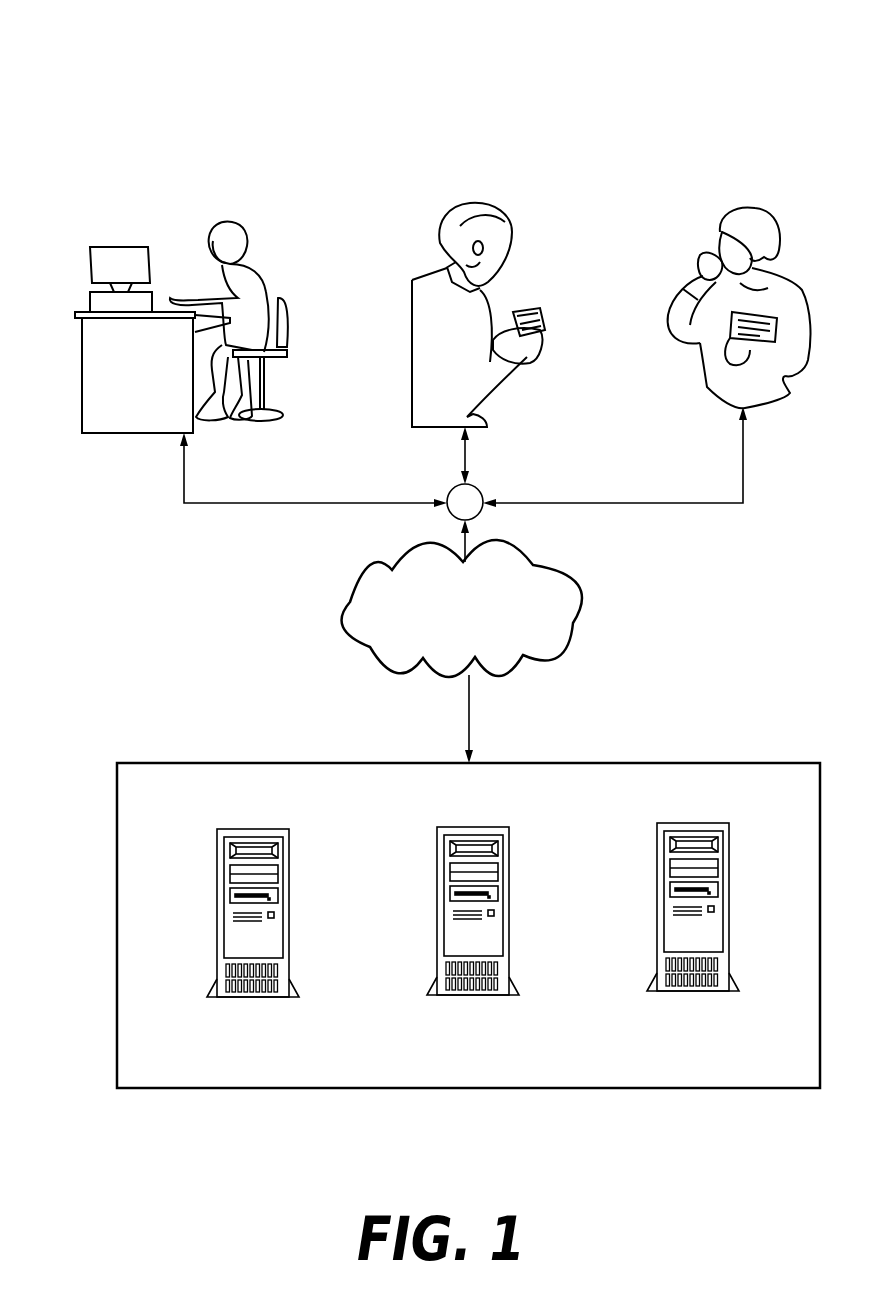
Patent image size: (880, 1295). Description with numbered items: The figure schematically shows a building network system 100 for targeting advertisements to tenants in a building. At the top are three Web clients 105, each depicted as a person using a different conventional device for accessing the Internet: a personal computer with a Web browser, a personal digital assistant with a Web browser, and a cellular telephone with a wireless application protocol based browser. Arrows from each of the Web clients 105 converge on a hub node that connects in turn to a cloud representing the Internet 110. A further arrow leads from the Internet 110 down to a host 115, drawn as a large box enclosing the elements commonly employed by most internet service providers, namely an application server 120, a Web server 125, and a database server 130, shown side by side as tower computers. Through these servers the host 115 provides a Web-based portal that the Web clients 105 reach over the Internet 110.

The building network system 100 is at (152, 55).
The Web clients 105 is at (116, 433).
The Internet 110 is at (345, 603).
The host 115 is at (160, 763).
The application server 120 is at (217, 872).
The Web server 125 is at (437, 870).
The database server 130 is at (657, 866).